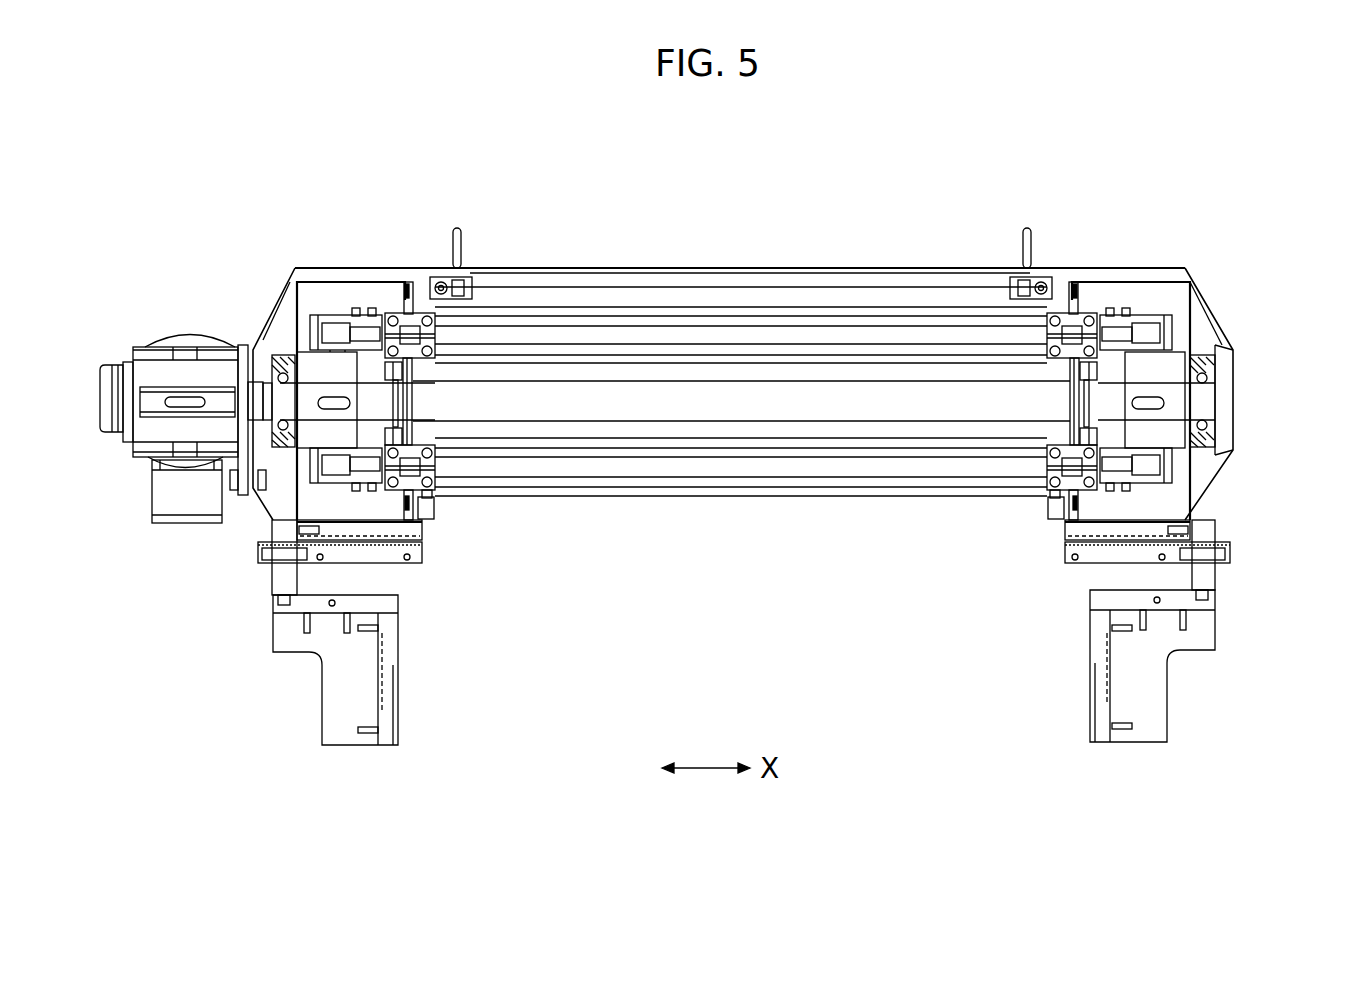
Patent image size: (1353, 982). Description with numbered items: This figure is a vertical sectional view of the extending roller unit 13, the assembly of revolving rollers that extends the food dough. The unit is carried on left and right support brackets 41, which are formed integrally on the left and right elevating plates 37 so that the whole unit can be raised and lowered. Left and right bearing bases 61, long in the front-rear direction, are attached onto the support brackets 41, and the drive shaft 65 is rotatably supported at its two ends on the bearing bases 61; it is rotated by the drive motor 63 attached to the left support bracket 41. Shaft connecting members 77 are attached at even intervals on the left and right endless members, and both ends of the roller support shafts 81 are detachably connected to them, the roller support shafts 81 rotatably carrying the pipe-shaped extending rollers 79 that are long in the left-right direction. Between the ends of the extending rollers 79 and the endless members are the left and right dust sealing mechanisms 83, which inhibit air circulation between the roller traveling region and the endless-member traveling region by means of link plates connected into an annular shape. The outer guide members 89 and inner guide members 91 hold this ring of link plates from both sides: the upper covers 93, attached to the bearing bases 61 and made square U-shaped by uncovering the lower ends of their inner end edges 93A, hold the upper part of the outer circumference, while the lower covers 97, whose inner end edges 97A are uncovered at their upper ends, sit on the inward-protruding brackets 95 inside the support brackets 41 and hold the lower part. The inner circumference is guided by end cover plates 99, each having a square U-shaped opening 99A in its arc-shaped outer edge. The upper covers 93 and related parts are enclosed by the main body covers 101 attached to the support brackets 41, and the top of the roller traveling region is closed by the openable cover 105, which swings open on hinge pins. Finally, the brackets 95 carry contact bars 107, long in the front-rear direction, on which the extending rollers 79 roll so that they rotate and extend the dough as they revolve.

The extending roller unit 13 is at (695, 240).
The elevating plate 37 is at (330, 707).
The support bracket 41 is at (280, 580).
The bearing base 61 is at (260, 340).
The drive motor 63 is at (172, 338).
The drive shaft 65 is at (796, 410).
The shaft connecting member 77 is at (332, 327).
The extending roller 79 is at (782, 310).
The roller support shaft 81 is at (856, 330).
The dust sealing mechanism 83 is at (405, 280).
The outer guide member 89 is at (415, 292).
The inner guide member 91 is at (418, 366).
The upper cover 93 is at (320, 300).
The inner end edge 93A is at (432, 290).
The bracket 95 is at (387, 542).
The lower cover 97 is at (372, 520).
The inner end edge 97A is at (377, 532).
The end cover plate 99 is at (413, 403).
The square U-shaped opening 99A is at (420, 432).
The main body cover 101 is at (258, 345).
The openable cover 105 is at (945, 268).
The contact bar 107 is at (430, 505).